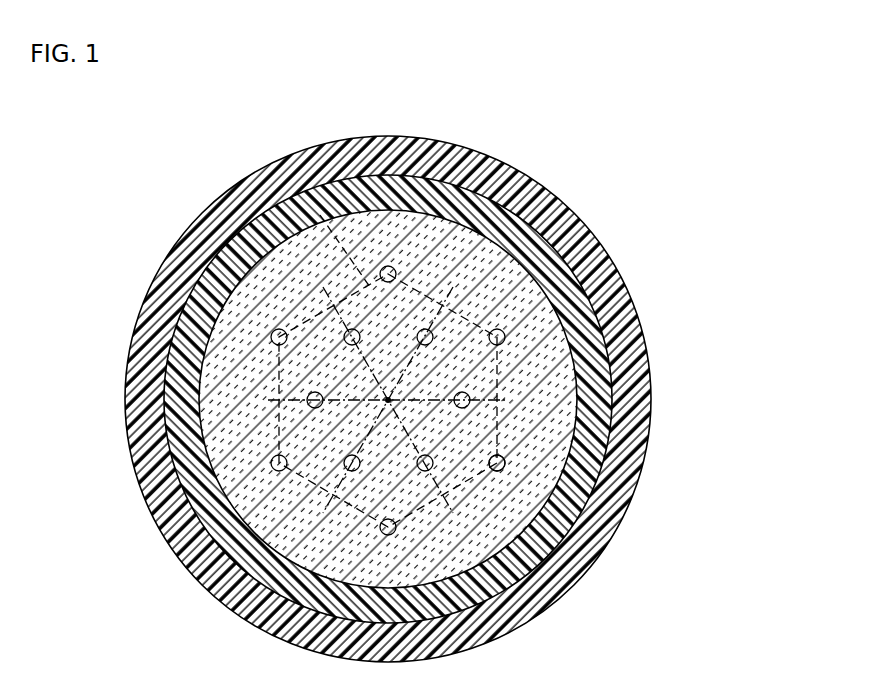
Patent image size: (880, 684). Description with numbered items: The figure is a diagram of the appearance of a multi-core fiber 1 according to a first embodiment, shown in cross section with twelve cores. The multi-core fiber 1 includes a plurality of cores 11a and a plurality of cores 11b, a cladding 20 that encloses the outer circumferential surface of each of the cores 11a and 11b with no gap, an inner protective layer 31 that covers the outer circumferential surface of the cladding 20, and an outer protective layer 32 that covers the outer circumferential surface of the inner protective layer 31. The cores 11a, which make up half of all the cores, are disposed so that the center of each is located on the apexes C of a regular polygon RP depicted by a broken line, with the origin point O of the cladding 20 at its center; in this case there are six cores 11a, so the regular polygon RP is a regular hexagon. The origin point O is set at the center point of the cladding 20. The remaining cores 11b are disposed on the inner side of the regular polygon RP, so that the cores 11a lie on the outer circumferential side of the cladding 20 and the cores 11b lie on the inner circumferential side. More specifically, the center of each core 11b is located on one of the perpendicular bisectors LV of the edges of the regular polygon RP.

The multi-core fiber 1 is at (674, 128).
The cores 11a is at (389, 266).
The cores 11b is at (347, 330).
The cladding 20 is at (515, 256).
The inner protective layer 31 is at (605, 427).
The outer protective layer 32 is at (630, 372).
The origin point O is at (388, 400).
The apexes C is at (505, 468).
The perpendicular bisectors LV is at (330, 297).
The regular polygon RP is at (320, 215).